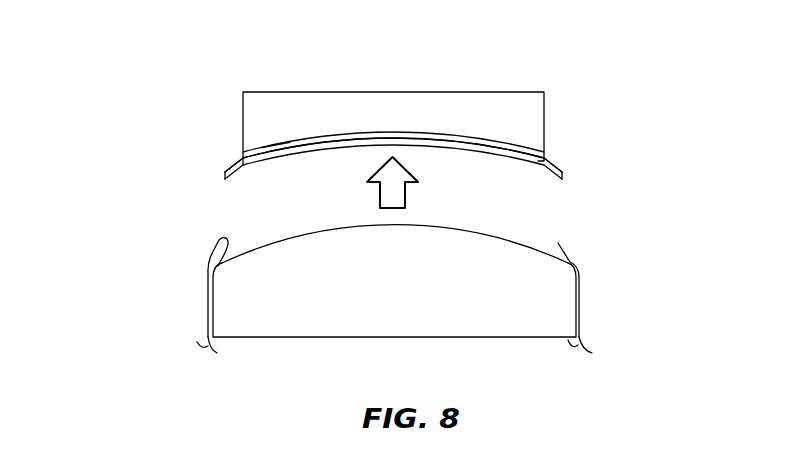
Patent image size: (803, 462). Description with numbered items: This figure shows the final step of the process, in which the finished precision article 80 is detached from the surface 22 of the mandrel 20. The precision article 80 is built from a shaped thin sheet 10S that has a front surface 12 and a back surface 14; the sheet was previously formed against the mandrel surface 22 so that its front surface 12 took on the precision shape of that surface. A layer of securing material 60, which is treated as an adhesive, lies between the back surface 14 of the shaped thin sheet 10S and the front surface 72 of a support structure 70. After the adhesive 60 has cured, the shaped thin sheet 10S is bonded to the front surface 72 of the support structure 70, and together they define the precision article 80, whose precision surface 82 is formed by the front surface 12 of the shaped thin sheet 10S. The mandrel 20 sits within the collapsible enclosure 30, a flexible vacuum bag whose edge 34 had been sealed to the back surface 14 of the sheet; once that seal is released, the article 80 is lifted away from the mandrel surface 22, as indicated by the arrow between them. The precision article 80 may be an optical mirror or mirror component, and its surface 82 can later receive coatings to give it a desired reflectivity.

The precision article 80 is at (174, 132).
The support structure 70 is at (515, 91).
The front surface of support structure 72 is at (265, 148).
The securing material 60 is at (544, 160).
The back surface 14 is at (426, 134).
The front surface 12 is at (513, 161).
The surface of precision article 82 is at (563, 210).
The shaped thin sheet 10S is at (449, 138).
The mandrel 20 is at (389, 274).
The mandrel surface 22 is at (260, 240).
The edge of flexible enclosure 34 is at (213, 238).
The collapsible enclosure 30 is at (577, 276).